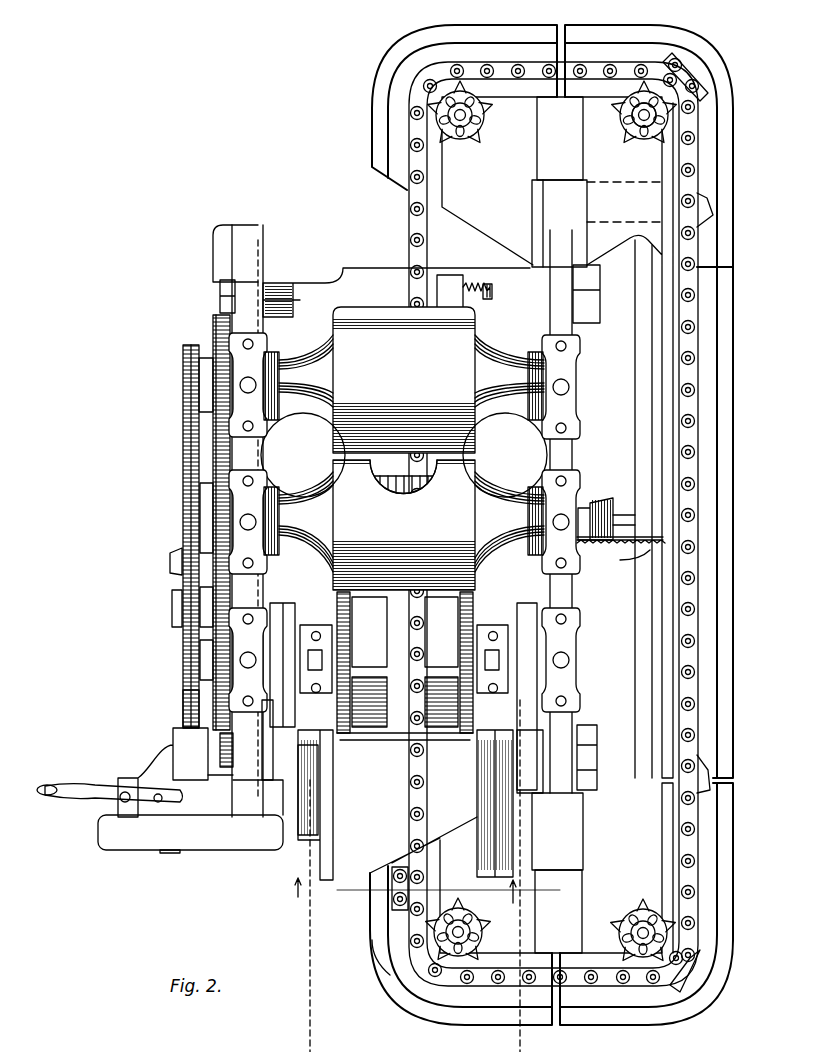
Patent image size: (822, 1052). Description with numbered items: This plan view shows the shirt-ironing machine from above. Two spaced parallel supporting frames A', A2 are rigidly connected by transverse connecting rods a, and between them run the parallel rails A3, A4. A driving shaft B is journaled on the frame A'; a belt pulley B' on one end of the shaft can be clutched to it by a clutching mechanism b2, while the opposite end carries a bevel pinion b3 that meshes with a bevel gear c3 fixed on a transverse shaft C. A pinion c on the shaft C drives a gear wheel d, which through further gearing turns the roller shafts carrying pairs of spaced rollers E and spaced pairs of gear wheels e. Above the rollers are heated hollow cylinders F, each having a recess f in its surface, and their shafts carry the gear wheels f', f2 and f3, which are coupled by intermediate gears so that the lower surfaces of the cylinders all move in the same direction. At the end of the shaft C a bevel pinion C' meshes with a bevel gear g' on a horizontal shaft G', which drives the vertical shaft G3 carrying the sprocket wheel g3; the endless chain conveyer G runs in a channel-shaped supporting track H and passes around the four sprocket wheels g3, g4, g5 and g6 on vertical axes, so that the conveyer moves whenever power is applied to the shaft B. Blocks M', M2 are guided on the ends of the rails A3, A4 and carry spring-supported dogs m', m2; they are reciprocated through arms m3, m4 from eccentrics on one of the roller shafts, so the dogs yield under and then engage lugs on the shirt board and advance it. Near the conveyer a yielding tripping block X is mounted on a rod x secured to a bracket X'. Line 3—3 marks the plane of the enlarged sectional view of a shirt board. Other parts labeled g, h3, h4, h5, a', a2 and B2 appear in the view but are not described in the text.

The channel-shaped supporting track H is at (395, 60).
The endless chain conveyer G is at (521, 478).
The chain g is at (545, 524).
The guide plate h3 is at (705, 76).
The sprocket wheel g3 is at (625, 115).
The vertical shaft G3 is at (638, 132).
The sprocket wheel g4 is at (470, 148).
The bracket X' is at (449, 272).
The tripping block X is at (474, 264).
The rod x is at (482, 283).
The bracket a2 is at (592, 268).
The supporting frame A2 is at (575, 330).
The horizontal shaft G' is at (620, 509).
The transverse shaft C is at (621, 495).
The bevel pinion C' is at (617, 487).
The bevel gear g' is at (625, 575).
The parallel rail A4 is at (490, 458).
The cap a' is at (188, 511).
The supporting frame A' is at (211, 521).
The gear wheel f' is at (190, 537).
The gear wheel d is at (183, 435).
The gear wheel f2 is at (200, 490).
The bevel gear c3 is at (200, 500).
The pinion c is at (200, 552).
The bevel pinion b3 is at (172, 565).
The gear wheel f3 is at (200, 660).
The driving shaft B is at (168, 705).
The parallel rail A3 is at (310, 436).
The transverse connecting rods a is at (396, 273).
The hollow cylinder F is at (305, 283).
The recess f is at (403, 472).
The arm m3 is at (283, 603).
The arm m4 is at (530, 603).
The spring-supported dog m' is at (332, 699).
The spring-supported dog m2 is at (500, 752).
The rollers E is at (415, 705).
The gear wheels e is at (420, 740).
The block M' is at (333, 790).
The block M2 is at (495, 795).
The sprocket wheel g5 is at (466, 898).
The sprocket wheel g6 is at (643, 905).
The casing corner h5 is at (370, 935).
The guide plate h4 is at (695, 975).
The base B2 is at (215, 848).
The belt pulley B' is at (245, 842).
The clutching mechanism b2 is at (95, 805).
The section line 3 is at (417, 916).